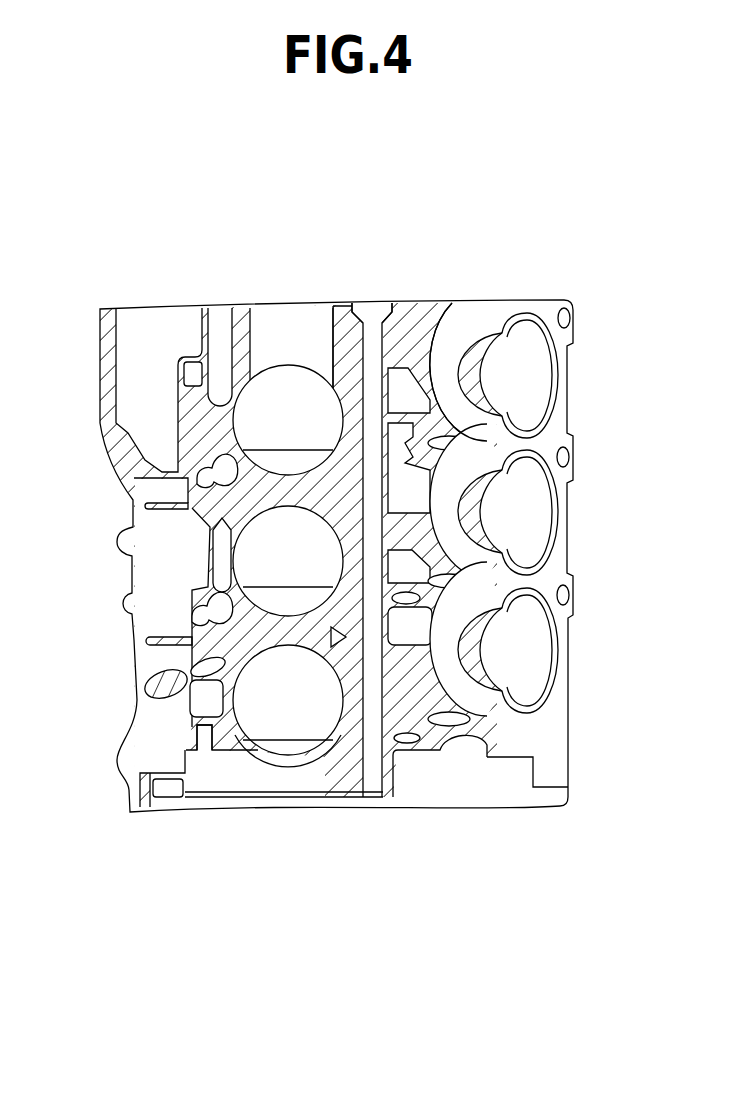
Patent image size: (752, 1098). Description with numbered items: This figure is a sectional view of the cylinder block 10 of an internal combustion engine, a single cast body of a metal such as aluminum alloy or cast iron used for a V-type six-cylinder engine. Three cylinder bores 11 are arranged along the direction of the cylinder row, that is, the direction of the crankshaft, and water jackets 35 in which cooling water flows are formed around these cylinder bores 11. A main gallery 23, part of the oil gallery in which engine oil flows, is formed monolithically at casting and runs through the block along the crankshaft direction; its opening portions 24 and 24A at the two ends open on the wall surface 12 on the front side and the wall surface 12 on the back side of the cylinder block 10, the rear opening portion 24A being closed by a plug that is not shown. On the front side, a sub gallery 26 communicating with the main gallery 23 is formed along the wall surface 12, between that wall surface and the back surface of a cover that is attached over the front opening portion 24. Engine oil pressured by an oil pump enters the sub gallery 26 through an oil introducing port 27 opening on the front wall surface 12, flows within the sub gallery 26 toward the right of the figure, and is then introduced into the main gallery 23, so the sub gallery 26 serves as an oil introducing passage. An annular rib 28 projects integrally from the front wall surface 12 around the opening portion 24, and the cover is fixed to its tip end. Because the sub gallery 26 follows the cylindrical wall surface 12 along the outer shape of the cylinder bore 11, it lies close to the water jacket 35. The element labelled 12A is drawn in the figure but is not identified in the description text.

The cylinder block 10 is at (130, 832).
The cylinder bore 11 is at (278, 392).
The wall surface 12 is at (280, 768).
The upper wall portion 12A is at (345, 302).
The main gallery 23 is at (442, 302).
The opening portion 24 is at (369, 720).
The opening portion 24A is at (372, 310).
The sub gallery 26 is at (247, 797).
The oil introducing port 27 is at (210, 735).
The rib 28 is at (187, 800).
The water jacket 35 is at (183, 706).